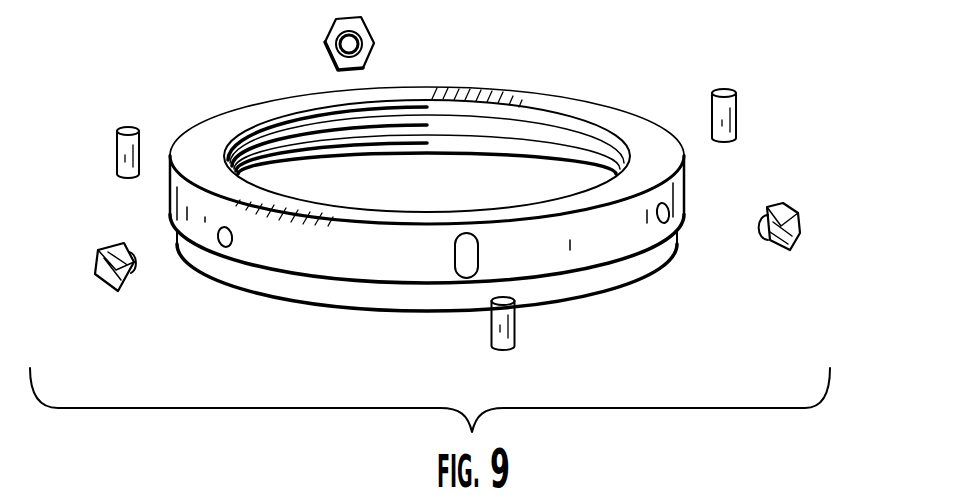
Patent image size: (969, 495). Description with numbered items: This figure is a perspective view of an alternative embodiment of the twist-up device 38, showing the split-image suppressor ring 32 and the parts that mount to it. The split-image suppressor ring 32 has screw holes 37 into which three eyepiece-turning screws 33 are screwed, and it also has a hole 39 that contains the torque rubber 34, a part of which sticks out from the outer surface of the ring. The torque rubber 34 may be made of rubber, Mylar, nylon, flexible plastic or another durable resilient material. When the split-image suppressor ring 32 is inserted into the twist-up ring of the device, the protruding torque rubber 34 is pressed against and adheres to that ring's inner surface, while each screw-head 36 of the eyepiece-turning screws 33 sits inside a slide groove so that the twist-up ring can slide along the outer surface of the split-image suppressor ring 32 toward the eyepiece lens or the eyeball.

The split-image suppressor ring 32 is at (353, 262).
The eyepiece-turning screw 33 is at (375, 44).
The torque rubber 34 is at (515, 318).
The screw-head 36 is at (793, 208).
The screw hole 37 is at (226, 247).
The twist-up device 38 is at (762, 245).
The hole 39 is at (456, 268).